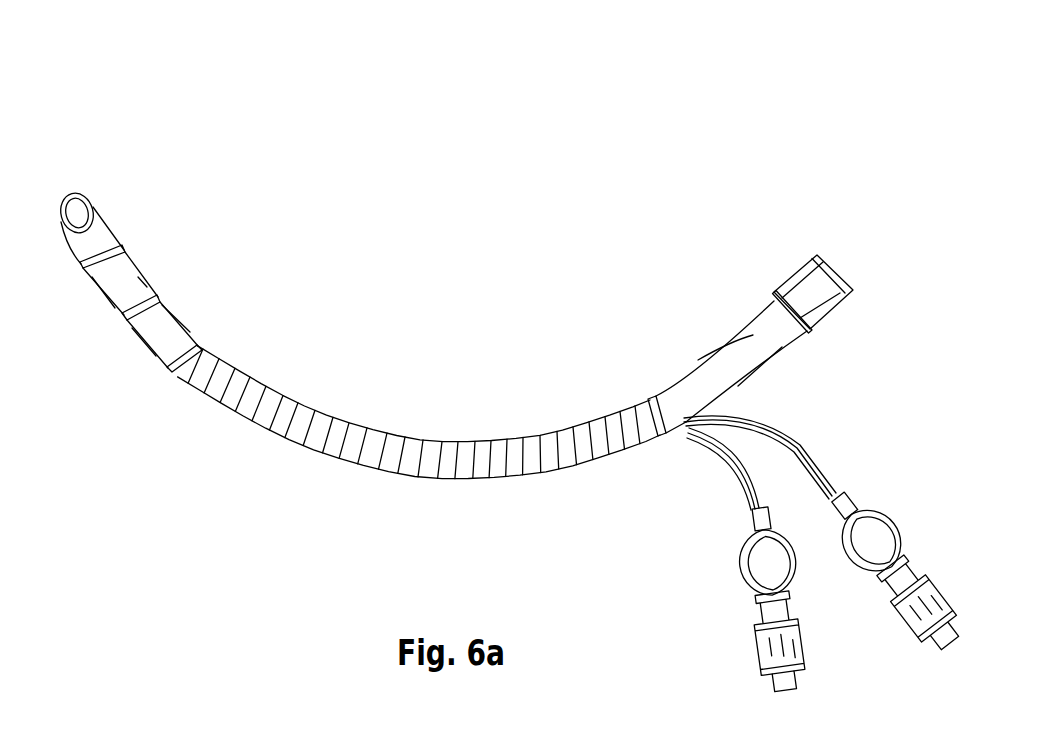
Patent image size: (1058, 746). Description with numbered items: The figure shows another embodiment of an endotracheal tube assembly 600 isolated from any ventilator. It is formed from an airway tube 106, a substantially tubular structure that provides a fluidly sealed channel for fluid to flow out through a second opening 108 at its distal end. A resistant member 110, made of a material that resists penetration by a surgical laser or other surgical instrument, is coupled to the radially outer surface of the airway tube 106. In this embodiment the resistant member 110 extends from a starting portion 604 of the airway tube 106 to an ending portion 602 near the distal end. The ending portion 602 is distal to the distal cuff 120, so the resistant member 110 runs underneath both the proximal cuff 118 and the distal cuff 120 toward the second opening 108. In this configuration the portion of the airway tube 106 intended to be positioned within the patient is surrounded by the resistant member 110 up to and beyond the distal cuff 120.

The endotracheal tube assembly 600 is at (552, 130).
The second opening 108 is at (75, 188).
The ending portion 602 is at (118, 239).
The distal cuff 120 is at (128, 276).
The proximal cuff 118 is at (155, 332).
The resistant member 110 is at (407, 435).
The starting portion 604 is at (665, 410).
The airway tube 106 is at (766, 328).